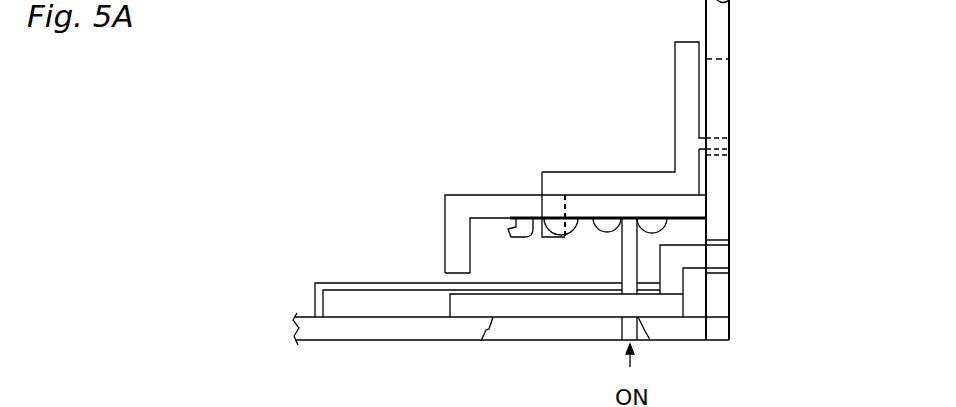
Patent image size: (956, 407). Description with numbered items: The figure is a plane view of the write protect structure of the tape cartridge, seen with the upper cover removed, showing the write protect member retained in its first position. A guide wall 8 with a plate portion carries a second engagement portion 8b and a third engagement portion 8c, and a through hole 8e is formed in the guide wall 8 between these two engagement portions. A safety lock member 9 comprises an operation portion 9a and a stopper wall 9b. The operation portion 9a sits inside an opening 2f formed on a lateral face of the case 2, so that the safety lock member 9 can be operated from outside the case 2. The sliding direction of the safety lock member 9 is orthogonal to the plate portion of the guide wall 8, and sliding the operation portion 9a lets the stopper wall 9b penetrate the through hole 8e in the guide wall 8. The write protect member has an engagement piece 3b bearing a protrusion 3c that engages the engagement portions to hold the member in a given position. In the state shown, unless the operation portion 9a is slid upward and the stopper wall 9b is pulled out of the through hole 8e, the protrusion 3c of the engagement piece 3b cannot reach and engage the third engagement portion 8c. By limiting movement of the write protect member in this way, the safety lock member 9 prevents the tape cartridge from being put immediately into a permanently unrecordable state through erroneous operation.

The case 2 is at (360, 332).
The opening 2f is at (720, 97).
The engagement piece 3b is at (628, 257).
The protrusion 3c is at (640, 217).
The guide wall 8 is at (456, 227).
The second engagement portion 8b is at (590, 217).
The third engagement portion 8c is at (508, 220).
The through hole 8e is at (541, 214).
The safety lock member 9 is at (682, 83).
The operation portion 9a is at (730, 142).
The stopper wall 9b is at (549, 238).